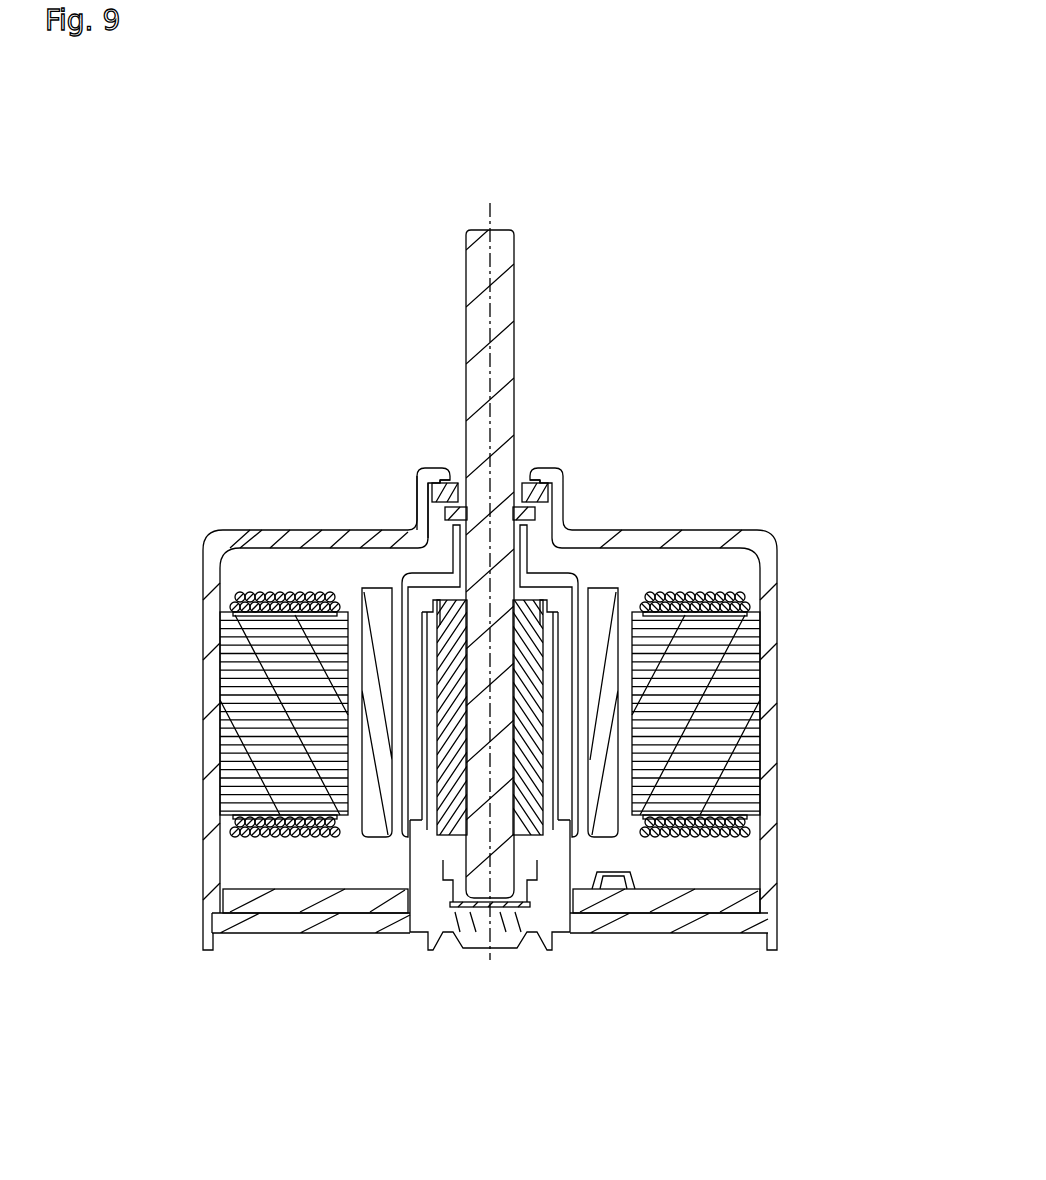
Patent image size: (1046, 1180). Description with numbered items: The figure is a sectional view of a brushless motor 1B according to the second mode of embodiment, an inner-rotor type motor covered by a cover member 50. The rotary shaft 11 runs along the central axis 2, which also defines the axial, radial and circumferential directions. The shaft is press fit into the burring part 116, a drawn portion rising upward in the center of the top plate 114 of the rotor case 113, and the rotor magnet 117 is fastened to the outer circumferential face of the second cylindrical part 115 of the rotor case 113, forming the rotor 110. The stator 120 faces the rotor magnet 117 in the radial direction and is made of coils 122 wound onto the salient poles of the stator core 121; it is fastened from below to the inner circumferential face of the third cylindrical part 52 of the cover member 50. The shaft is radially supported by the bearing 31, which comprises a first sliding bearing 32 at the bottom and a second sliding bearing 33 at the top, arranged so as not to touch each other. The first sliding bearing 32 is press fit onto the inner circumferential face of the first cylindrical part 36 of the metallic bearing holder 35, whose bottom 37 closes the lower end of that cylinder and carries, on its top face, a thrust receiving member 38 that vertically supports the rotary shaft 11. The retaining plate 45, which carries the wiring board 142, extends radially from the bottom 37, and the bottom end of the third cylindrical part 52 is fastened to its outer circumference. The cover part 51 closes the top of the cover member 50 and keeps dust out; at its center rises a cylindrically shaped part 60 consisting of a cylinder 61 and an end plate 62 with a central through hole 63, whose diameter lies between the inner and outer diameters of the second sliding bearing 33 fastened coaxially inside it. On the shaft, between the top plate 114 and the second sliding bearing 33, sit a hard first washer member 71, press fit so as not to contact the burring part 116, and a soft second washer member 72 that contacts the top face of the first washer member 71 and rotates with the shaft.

The central axis 2 is at (489, 212).
The rotary shaft 11 is at (480, 327).
The brushless motor 1B is at (638, 360).
The bearing 31 is at (511, 716).
The first sliding bearing 32 is at (413, 933).
The second sliding bearing 33 is at (553, 468).
The bearing holder 35 is at (453, 933).
The first cylindrical part 36 is at (563, 933).
The bottom 37 is at (482, 933).
The thrust receiving member 38 is at (515, 933).
The retaining plate 45 is at (720, 923).
The cover member 50 is at (792, 540).
The cover part 51 is at (313, 540).
The third cylindrical part 52 is at (777, 752).
The cylindrically shaped part 60 is at (427, 468).
The cylinder 61 is at (437, 485).
The end plate 62 is at (447, 468).
The through hole 63 is at (525, 468).
The first washer member 71 is at (540, 515).
The second washer member 72 is at (553, 497).
The rotor 110 is at (760, 530).
The rotor case 113 is at (639, 564).
The top plate 114 is at (317, 530).
The second cylindrical part 115 is at (398, 705).
The burring part 116 is at (428, 580).
The rotor magnet 117 is at (382, 636).
The stator 120 is at (739, 861).
The stator core 121 is at (738, 662).
The coils 122 is at (287, 640).
The wiring board 142 is at (272, 903).